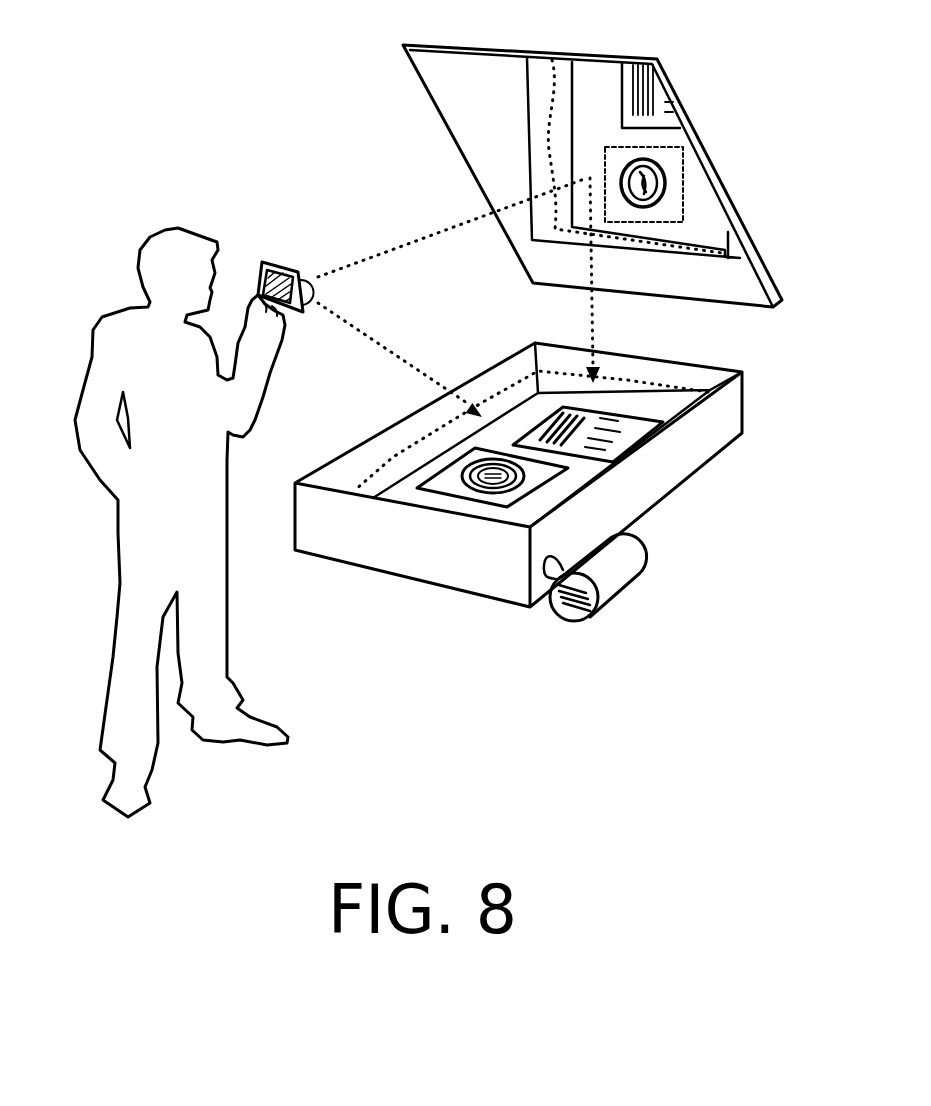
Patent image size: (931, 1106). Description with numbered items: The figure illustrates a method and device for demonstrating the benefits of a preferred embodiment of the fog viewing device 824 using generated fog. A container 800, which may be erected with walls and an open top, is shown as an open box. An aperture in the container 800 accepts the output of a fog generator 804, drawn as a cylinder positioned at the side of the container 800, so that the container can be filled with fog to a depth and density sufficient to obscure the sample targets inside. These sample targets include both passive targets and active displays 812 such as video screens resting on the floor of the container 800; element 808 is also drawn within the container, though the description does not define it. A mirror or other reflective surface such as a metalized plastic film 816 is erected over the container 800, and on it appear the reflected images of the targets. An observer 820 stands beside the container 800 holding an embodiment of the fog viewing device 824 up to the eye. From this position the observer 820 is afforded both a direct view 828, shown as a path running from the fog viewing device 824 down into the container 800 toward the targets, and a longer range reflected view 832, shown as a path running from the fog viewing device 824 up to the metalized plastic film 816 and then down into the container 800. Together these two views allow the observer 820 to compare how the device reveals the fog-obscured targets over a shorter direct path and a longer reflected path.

The container 800 is at (657, 505).
The fog generator 804 is at (619, 595).
The fingerprint scanner 808 is at (390, 458).
The active displays 812 is at (537, 422).
The metalized plastic film 816 is at (428, 92).
The observer 820 is at (162, 228).
The fog viewing device 824 is at (258, 268).
The direct view 828 is at (355, 328).
The reflected view 832 is at (458, 227).